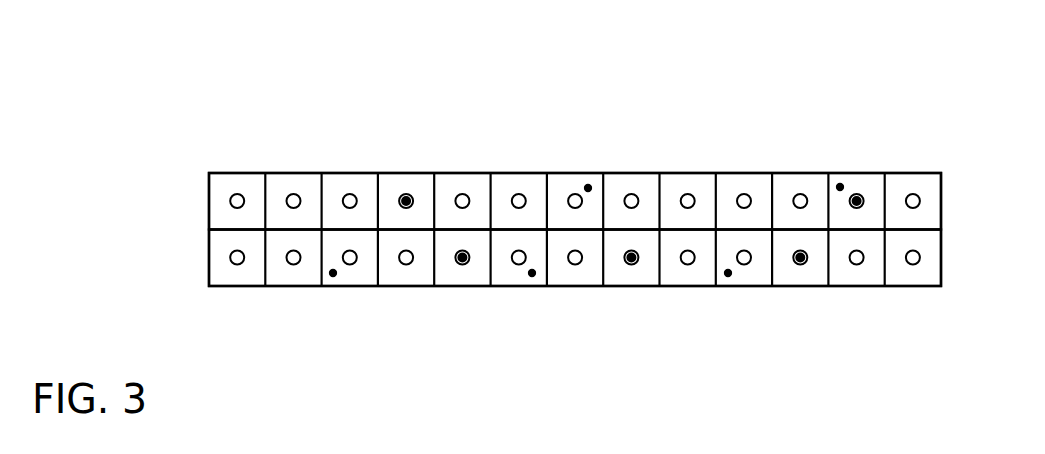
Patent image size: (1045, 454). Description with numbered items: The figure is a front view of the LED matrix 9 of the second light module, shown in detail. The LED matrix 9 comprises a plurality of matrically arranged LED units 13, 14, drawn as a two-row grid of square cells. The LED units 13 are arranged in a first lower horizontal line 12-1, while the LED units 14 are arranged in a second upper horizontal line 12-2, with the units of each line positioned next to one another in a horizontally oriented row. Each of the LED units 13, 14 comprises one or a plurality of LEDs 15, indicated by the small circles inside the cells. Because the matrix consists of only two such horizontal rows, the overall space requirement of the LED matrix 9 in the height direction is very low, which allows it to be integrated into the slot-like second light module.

The LED matrix 9 is at (503, 115).
The first lower horizontal line 12-1 is at (182, 258).
The second upper horizontal line 12-2 is at (182, 202).
The LED unit 13 is at (333, 273).
The LED unit 14 is at (588, 188).
The LED 15 is at (406, 201).